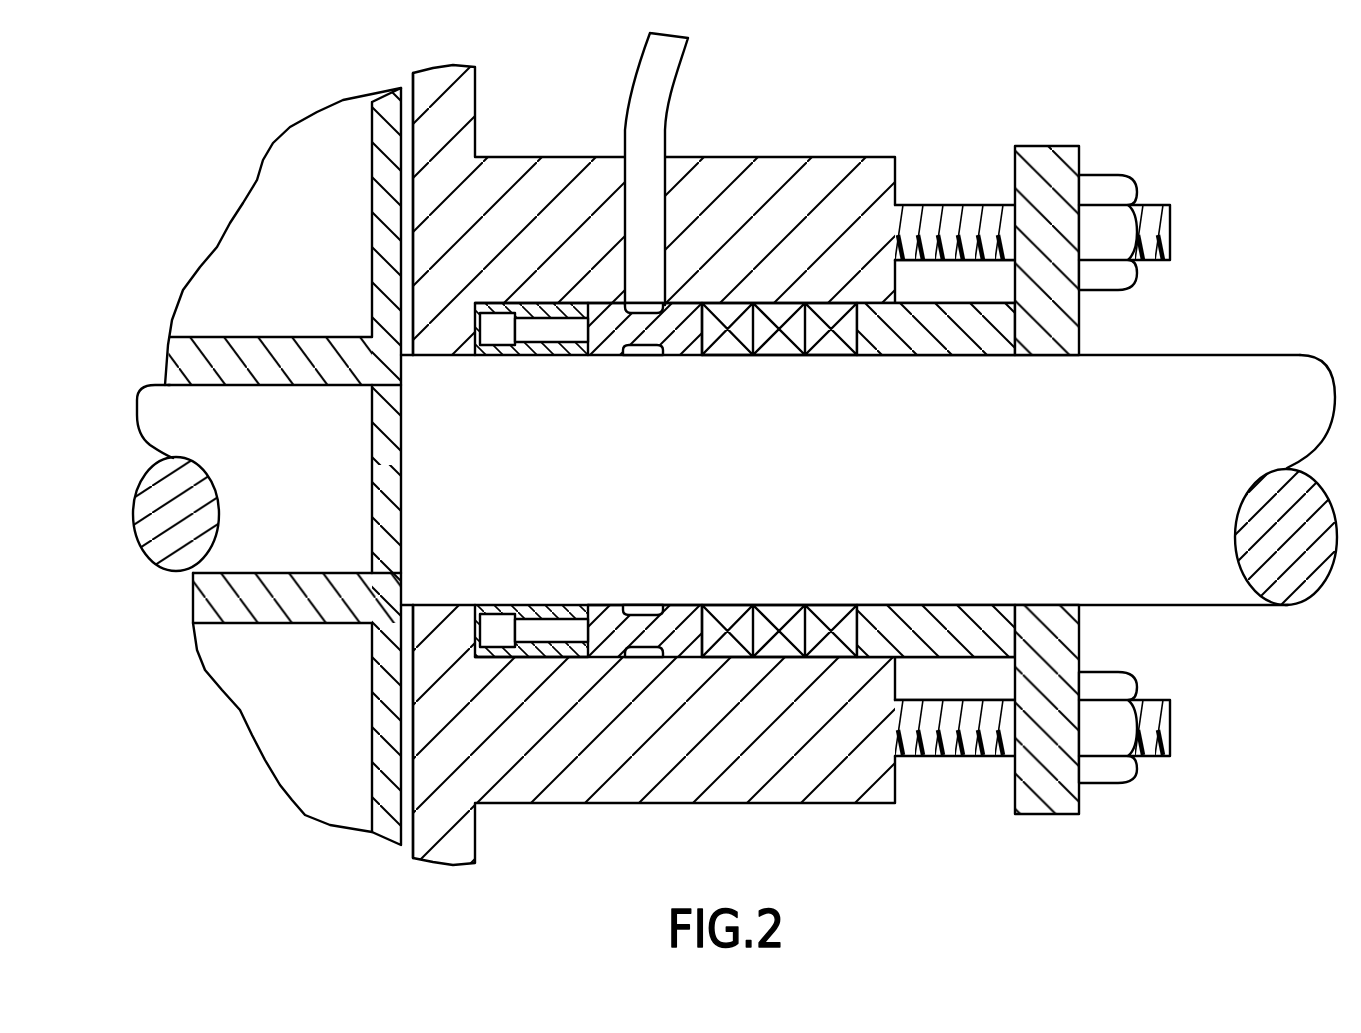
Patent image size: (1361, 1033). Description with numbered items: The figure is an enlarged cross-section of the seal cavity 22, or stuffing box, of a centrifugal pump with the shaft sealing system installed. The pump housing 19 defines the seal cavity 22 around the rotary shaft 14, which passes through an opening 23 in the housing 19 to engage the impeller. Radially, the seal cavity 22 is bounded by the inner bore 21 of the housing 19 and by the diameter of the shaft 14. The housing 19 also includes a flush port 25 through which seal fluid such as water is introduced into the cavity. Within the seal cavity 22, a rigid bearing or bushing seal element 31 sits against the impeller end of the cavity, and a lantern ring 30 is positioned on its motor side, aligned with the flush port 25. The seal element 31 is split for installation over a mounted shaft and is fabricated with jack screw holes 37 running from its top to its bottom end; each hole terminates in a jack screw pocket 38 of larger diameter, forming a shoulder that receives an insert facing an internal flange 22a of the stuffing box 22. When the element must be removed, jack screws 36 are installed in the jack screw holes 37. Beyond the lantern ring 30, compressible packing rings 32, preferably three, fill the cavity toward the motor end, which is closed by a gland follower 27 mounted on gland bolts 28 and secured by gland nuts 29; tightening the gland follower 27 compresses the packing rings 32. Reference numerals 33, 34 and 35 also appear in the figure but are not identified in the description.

The rotary shaft 14 is at (1243, 375).
The housing 19 is at (788, 205).
The inner bore 21 is at (537, 658).
The seal cavity 22 is at (381, 519).
The internal flange 22a is at (470, 353).
The opening 23 is at (427, 357).
The flush port 25 is at (647, 105).
The gland follower 27 is at (1040, 146).
The gland bolts 28 is at (1153, 220).
The gland nuts 29 is at (1110, 185).
The lantern ring 30 is at (605, 357).
The bushing seal element 31 is at (500, 337).
The compressible packing ring 32 is at (830, 615).
The seal ring 33 is at (600, 640).
The seal body 34 is at (682, 642).
The recess 35 is at (650, 630).
The jack screws 36 is at (604, 659).
The jack screw holes 37 is at (553, 334).
The jack screw pocket 38 is at (488, 625).